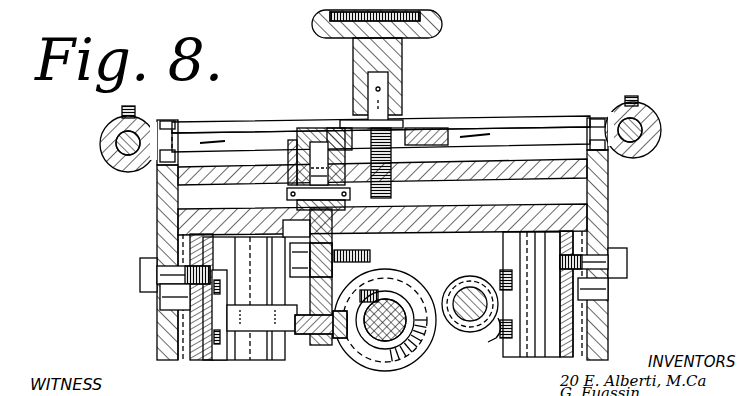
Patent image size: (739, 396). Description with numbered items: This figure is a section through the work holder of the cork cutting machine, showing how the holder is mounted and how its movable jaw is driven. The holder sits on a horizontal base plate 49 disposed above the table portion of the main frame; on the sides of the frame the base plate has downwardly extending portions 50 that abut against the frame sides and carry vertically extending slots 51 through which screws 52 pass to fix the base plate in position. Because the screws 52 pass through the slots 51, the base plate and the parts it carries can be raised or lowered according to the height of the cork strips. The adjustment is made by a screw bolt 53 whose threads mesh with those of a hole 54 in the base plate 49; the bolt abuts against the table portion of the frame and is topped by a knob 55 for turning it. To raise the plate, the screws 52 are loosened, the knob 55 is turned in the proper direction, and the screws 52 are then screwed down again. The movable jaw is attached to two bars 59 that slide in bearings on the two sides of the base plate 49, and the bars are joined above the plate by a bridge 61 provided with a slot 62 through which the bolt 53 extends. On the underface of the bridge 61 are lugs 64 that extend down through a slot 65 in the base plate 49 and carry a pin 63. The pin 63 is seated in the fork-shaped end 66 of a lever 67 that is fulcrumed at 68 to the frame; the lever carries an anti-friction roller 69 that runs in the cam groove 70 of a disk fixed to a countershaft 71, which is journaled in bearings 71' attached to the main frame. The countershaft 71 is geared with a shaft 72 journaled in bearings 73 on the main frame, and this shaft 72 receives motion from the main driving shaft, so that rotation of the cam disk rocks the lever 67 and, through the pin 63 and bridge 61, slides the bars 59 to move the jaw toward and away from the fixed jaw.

The base plate 49 is at (528, 160).
The downwardly extending portions 50 is at (168, 334).
The vertically extending slots 51 is at (172, 298).
The screws 52 is at (143, 266).
The screw bolt 53 is at (402, 127).
The hole 54 is at (392, 180).
The knob 55 is at (432, 26).
The bars 59 is at (122, 144).
The bridge 61 is at (488, 131).
The slot 62 is at (360, 134).
The pin 63 is at (287, 193).
The lugs 64 is at (295, 146).
The slot 65 is at (290, 178).
The fork-shaped end 66 is at (300, 206).
The lever 67 is at (318, 286).
The fulcrum 68 is at (366, 256).
The anti-friction roller 69 is at (342, 338).
The cam groove 70 is at (394, 292).
The countershaft 71 is at (387, 347).
The bearings 71' is at (256, 333).
The shaft 72 is at (470, 290).
The bearings 73 is at (490, 338).